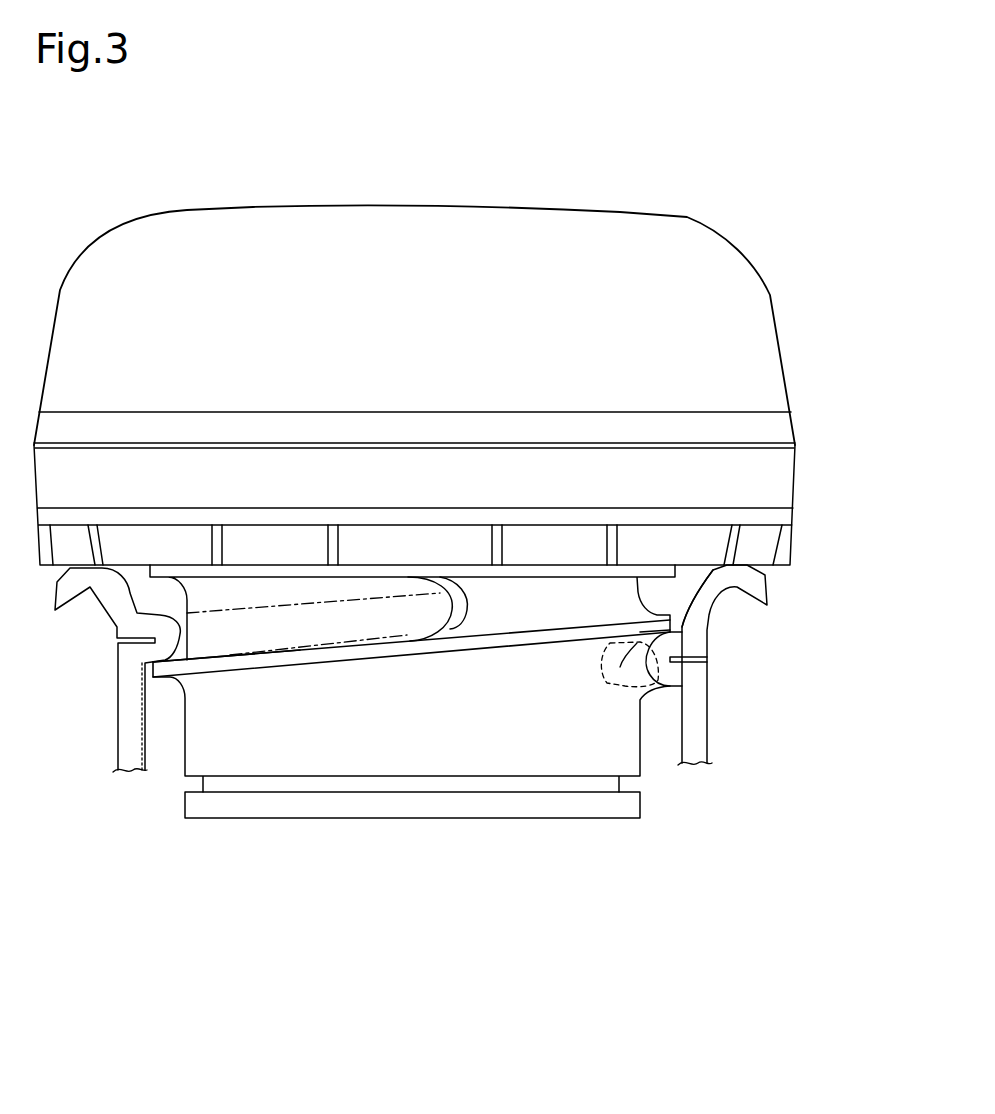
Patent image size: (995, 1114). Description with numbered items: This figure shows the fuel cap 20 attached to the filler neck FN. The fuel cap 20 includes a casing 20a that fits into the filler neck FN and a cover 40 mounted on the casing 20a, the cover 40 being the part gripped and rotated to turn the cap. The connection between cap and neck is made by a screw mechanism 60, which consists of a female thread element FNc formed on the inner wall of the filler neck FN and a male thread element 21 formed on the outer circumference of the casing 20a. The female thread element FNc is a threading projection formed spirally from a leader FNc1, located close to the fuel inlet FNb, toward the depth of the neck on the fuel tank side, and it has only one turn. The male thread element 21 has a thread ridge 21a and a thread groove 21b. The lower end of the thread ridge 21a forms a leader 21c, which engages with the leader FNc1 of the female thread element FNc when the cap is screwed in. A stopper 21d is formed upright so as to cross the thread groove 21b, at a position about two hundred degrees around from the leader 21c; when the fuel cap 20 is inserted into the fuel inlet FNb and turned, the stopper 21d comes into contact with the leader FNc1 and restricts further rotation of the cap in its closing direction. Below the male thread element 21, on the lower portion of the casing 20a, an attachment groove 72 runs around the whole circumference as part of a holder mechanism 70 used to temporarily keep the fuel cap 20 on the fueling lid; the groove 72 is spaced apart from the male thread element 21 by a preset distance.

The fuel cap 20 is at (751, 152).
The cover 40 is at (782, 348).
The casing 20a is at (642, 763).
The male thread element 21 is at (411, 767).
The thread ridge 21a is at (250, 663).
The thread groove 21b is at (308, 628).
The leader 21c is at (605, 758).
The stopper 21d is at (445, 623).
The screw mechanism 60 is at (512, 767).
The holder mechanism 70 is at (388, 836).
The attachment groove 72 is at (225, 792).
The filler neck FN is at (707, 738).
The fuel inlet FNb is at (680, 598).
The female thread element FNc is at (668, 673).
The leader FNc1 is at (643, 645).